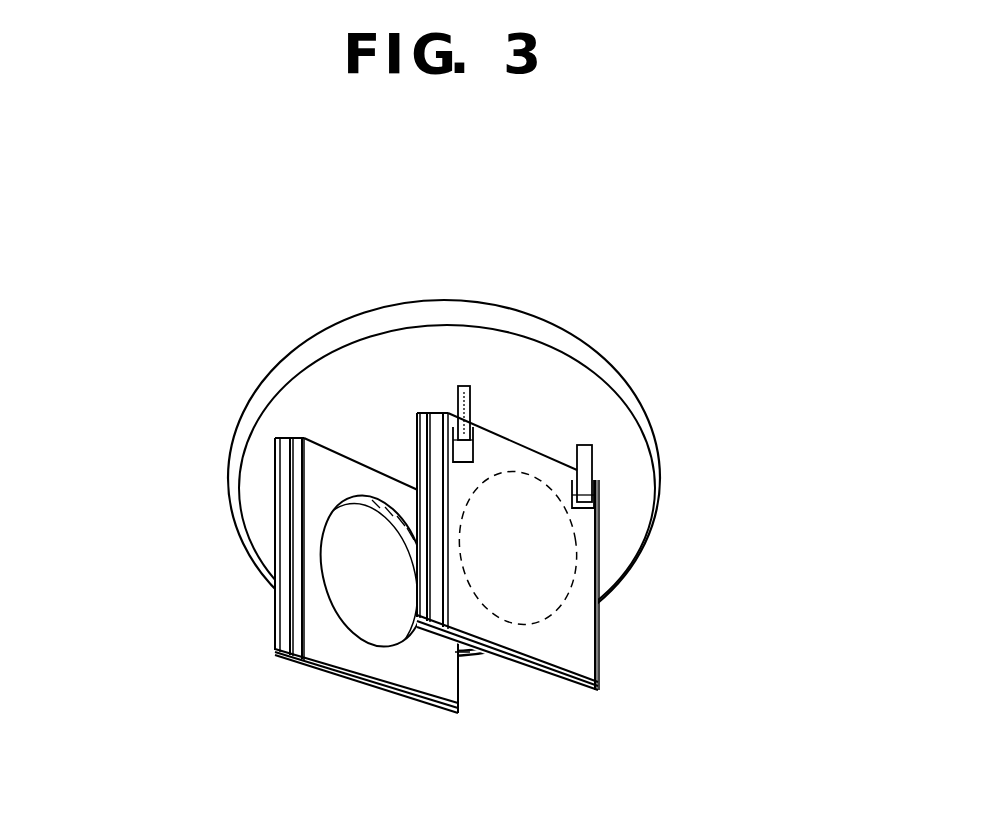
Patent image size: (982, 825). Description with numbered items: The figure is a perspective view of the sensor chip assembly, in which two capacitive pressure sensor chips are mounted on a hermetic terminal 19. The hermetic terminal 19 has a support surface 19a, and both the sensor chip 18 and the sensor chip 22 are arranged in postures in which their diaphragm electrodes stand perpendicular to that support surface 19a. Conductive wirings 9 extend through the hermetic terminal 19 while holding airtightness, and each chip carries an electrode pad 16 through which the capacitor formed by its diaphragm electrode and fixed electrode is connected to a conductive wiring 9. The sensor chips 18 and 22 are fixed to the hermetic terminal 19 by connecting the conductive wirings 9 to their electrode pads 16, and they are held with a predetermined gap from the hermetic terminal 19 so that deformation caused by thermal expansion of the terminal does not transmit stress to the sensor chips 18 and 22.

The hermetic terminal 19 is at (303, 327).
The support surface 19a is at (280, 400).
The sensor chip 22 is at (243, 650).
The sensor chip 18 is at (617, 678).
The conductive wiring 9 is at (472, 393).
The electrode pad 16 is at (600, 507).